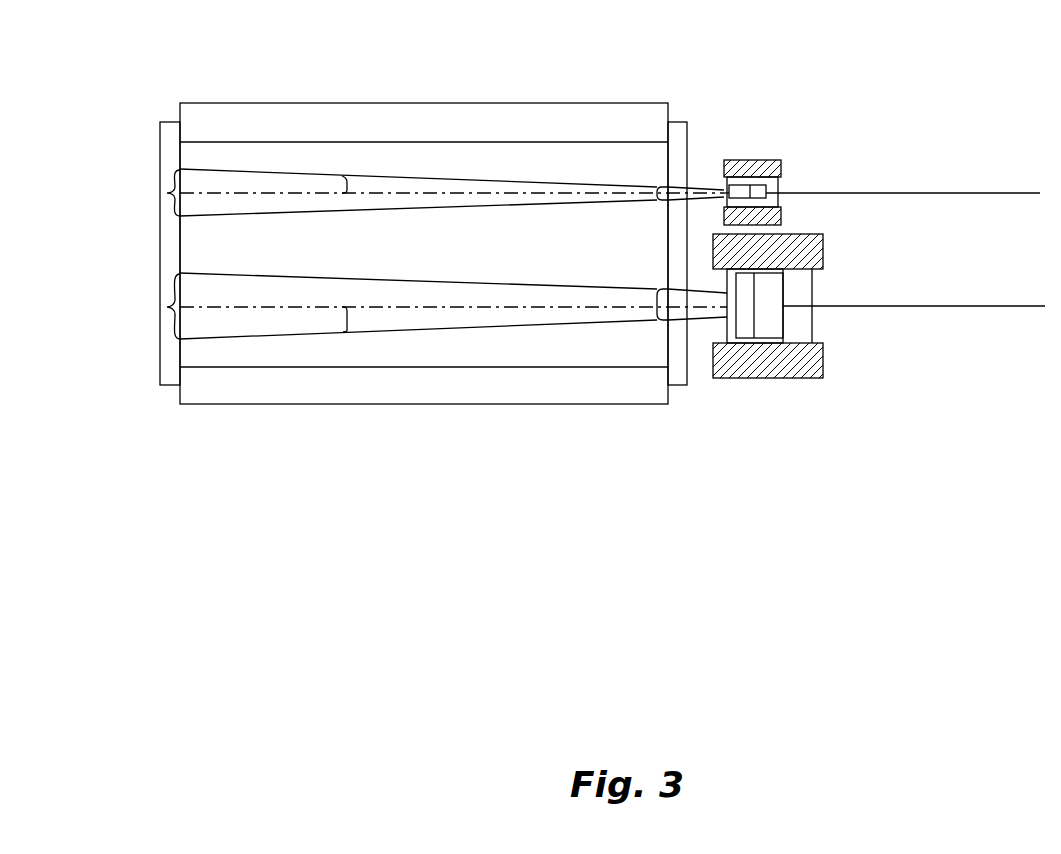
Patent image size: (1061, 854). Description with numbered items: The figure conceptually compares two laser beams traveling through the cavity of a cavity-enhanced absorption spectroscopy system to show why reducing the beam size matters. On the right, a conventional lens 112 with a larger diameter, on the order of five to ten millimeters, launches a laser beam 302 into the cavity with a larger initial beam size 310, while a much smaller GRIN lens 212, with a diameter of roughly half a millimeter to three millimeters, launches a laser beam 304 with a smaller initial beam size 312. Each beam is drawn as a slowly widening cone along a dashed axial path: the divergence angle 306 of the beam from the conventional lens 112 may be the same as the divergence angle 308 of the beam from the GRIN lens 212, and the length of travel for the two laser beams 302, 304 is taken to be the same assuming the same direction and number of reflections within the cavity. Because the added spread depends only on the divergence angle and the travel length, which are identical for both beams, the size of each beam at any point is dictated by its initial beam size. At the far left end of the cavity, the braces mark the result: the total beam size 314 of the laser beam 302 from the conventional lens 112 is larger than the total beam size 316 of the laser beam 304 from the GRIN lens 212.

The conventional lens 112 is at (722, 378).
The GRIN lens 212 is at (724, 185).
The laser beam 302 is at (448, 331).
The laser beam 304 is at (443, 180).
The divergence angle 306 is at (345, 331).
The divergence angle 308 is at (345, 178).
The initial beam size 310 is at (657, 307).
The initial beam size 312 is at (657, 190).
The total beam size 314 is at (167, 307).
The total beam size 316 is at (167, 193).